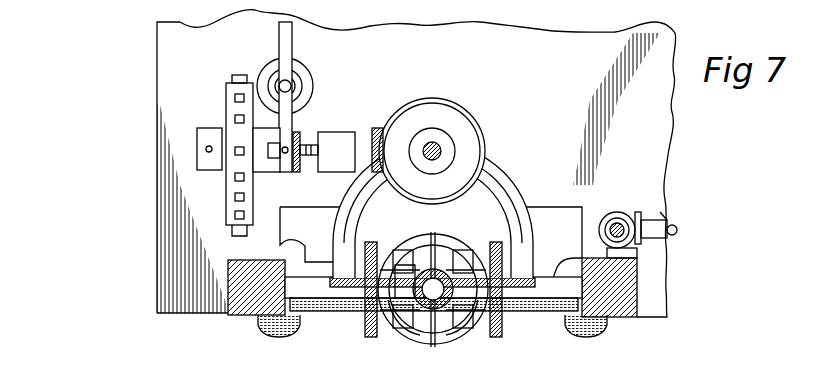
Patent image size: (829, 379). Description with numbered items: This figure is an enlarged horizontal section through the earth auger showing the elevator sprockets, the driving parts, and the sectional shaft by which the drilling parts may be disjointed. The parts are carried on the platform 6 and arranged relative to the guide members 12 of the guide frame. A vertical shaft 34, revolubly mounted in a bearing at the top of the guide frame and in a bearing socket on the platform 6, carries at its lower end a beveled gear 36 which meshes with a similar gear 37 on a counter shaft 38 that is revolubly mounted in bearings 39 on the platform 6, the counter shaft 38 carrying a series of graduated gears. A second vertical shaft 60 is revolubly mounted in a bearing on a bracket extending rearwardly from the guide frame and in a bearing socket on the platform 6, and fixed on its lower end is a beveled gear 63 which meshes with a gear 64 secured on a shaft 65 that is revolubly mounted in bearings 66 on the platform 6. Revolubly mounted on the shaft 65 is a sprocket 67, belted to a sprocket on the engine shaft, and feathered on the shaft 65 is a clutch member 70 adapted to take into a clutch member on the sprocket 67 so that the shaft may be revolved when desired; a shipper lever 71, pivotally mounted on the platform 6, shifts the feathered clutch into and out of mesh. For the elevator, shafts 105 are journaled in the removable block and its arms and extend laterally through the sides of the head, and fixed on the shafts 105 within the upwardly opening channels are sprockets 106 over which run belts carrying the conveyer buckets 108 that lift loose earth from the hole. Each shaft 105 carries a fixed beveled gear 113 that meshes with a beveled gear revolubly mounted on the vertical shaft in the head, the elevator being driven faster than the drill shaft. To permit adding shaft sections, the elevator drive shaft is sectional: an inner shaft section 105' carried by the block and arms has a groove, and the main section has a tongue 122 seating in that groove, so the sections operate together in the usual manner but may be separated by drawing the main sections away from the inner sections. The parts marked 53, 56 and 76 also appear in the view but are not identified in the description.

The platform 6 is at (670, 128).
The guide members 12 is at (252, 300).
The vertical shaft 34 is at (617, 223).
The beveled gear 36 is at (605, 218).
The beveled gear 37 is at (638, 212).
The counter shaft 38 is at (677, 229).
The bearings 39 is at (664, 219).
The lug 53 is at (285, 331).
The shaft 56 is at (337, 172).
The vertical shaft 60 is at (438, 146).
The beveled gear 63 is at (470, 123).
The gear 64 is at (376, 128).
The shaft 65 is at (320, 140).
The bearings 66 is at (206, 128).
The sprocket 67 is at (226, 184).
The clutch member 70 is at (292, 172).
The shipper lever 71 is at (291, 42).
The wheel 76 is at (443, 343).
The shafts 105 is at (433, 285).
The shaft section 105' is at (443, 336).
The sprockets 106 is at (405, 250).
The conveyer buckets 108 is at (432, 255).
The beveled gear 113 is at (372, 242).
The tongue 122 is at (385, 325).